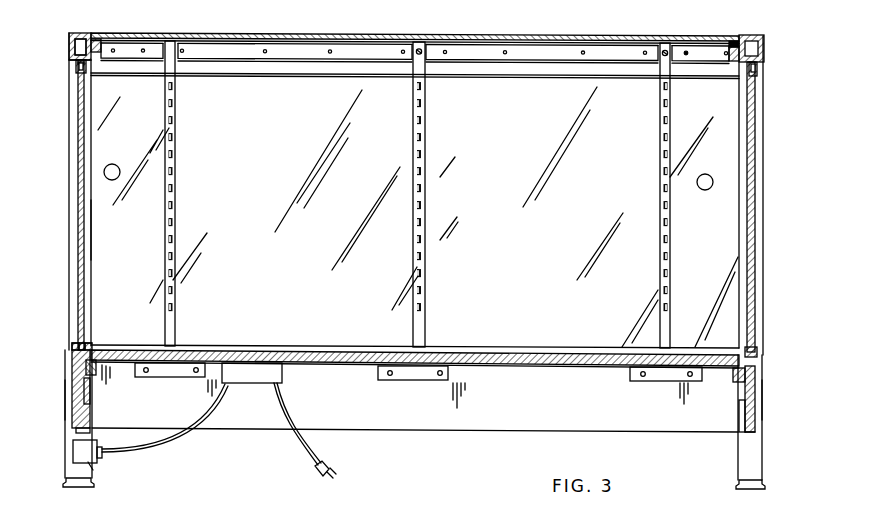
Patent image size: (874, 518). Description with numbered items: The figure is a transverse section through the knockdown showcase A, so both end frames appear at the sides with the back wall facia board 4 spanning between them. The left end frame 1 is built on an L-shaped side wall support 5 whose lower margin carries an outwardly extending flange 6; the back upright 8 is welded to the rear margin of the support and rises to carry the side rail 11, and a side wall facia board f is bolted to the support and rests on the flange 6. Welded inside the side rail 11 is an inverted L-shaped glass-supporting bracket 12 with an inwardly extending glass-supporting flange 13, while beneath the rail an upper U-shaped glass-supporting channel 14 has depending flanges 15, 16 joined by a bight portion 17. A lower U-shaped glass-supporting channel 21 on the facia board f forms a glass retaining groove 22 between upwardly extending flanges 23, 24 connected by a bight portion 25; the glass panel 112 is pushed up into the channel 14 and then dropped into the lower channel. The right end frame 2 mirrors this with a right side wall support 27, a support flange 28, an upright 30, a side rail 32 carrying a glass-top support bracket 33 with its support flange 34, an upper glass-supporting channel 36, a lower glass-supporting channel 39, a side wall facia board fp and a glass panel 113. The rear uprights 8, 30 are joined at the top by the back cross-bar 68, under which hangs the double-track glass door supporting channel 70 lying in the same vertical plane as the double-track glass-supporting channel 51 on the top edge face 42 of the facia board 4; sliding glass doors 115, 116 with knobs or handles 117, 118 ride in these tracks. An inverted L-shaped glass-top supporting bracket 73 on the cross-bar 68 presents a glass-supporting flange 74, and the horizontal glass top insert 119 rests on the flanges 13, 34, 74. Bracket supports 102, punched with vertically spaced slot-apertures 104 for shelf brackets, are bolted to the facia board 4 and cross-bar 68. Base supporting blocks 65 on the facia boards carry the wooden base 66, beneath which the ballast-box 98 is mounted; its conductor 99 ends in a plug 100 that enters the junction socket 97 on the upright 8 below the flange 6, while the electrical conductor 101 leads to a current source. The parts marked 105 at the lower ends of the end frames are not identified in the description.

The left end frame 1 is at (72, 452).
The right end frame 2 is at (736, 447).
The back wall facia board 4 is at (570, 430).
The side wall support 5 is at (90, 415).
The outwardly extending flange 6 is at (78, 433).
The back upright 8 is at (69, 190).
The side rail 11 is at (76, 33).
The inverted L-shaped glass-supporting bracket 12 is at (127, 35).
The glass-supporting flange 13 is at (100, 44).
The upper U-shaped glass-supporting channel 14 is at (72, 60).
The depending flange 15 is at (76, 65).
The depending flange 16 is at (88, 70).
The bight portion 17 is at (84, 40).
The lower U-shaped glass-supporting channel 21 is at (86, 352).
The glass retaining groove 22 is at (94, 358).
The upwardly extending flange 23 is at (75, 345).
The upwardly extending flange 24 is at (85, 345).
The bight portion 25 is at (78, 345).
The right side wall support 27 is at (740, 410).
The support flange 28 is at (750, 434).
The upright 30 is at (763, 192).
The side rail 32 is at (757, 36).
The glass-top support bracket 33 is at (737, 60).
The support flange 34 is at (733, 42).
The upper U-shaped glass-supporting channel 36 is at (757, 70).
The lower U-shaped glass-supporting channel 39 is at (752, 352).
The top edge face 42 is at (533, 352).
The double-track glass-supporting channel 51 is at (514, 323).
The base supporting blocks 65 is at (106, 384).
The wooden base 66 is at (285, 352).
The back cross-bar 68 is at (388, 36).
The double-track glass door supporting channel 70 is at (637, 77).
The inverted L-shaped glass-top supporting bracket 73 is at (530, 50).
The glass-supporting flange 74 is at (515, 44).
The junction socket 97 is at (88, 462).
The ballast-box 98 is at (284, 382).
The conductor 99 is at (200, 436).
The plug 100 is at (102, 458).
The electrical conductor 101 is at (292, 421).
The bracket supports 102 is at (175, 164).
The slot-apertures 104 is at (175, 100).
The foot 105 is at (66, 483).
The glass panel 112 is at (84, 233).
The glass panel 113 is at (745, 216).
The glass door 115 is at (290, 93).
The glass door 116 is at (578, 100).
The knob or handle 117 is at (120, 172).
The knob or handle 118 is at (697, 180).
The horizontal glass top insert 119 is at (455, 37).
The knockdown showcase A is at (440, 445).
The side wall facia board f is at (75, 390).
The side wall facia board fp is at (757, 395).